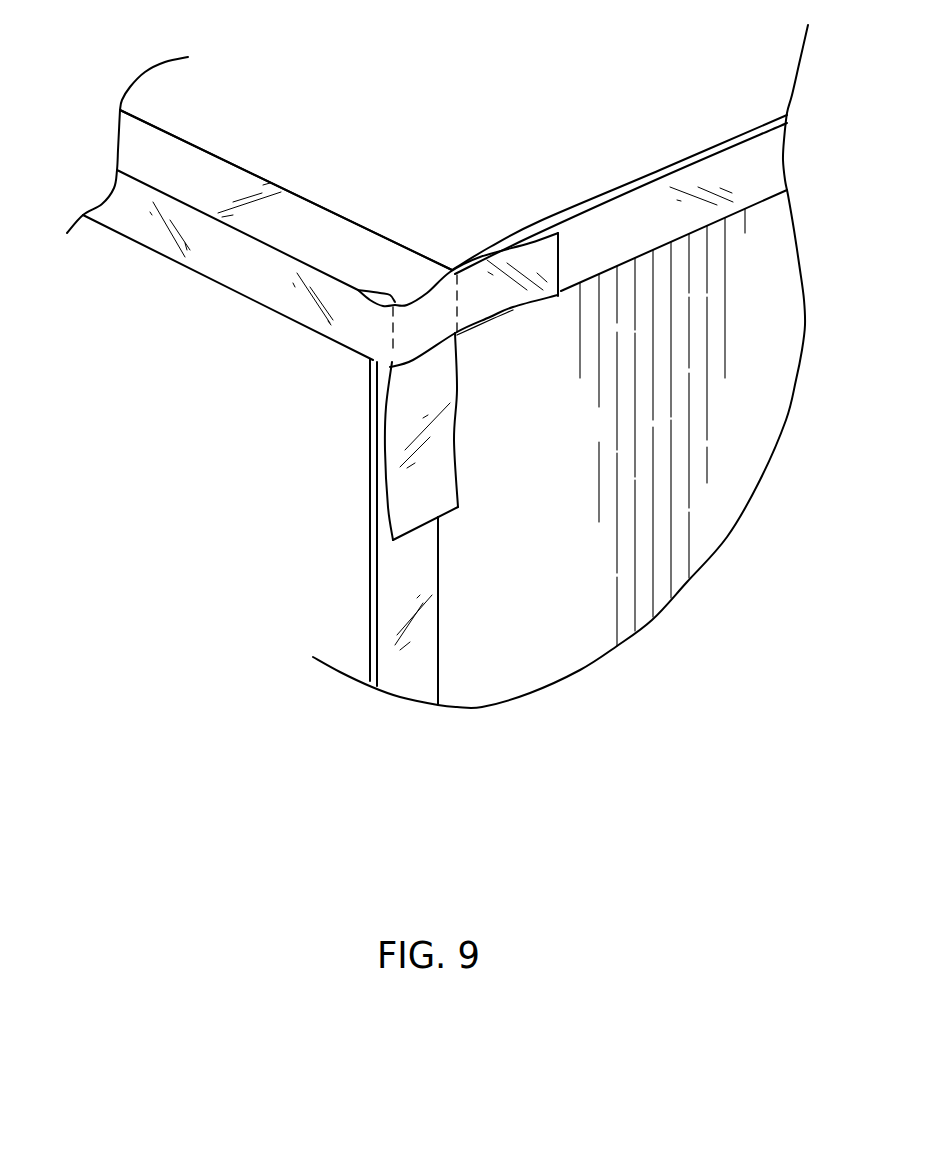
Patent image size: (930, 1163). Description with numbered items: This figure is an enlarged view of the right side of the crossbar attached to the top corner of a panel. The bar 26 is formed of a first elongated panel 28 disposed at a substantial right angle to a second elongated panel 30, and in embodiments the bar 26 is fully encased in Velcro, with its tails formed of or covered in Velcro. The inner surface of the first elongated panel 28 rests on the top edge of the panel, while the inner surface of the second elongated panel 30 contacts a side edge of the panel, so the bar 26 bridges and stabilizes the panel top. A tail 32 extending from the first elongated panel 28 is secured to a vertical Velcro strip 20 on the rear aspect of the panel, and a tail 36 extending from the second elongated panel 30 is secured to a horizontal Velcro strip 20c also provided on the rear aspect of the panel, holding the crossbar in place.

The vertical Velcro strip 20 is at (403, 592).
The horizontal Velcro strip 20c is at (733, 167).
The bar 26 is at (321, 178).
The first elongated panel 28 is at (205, 177).
The second elongated panel 30 is at (135, 223).
The first tail 32 is at (430, 473).
The first tail 36 is at (518, 262).